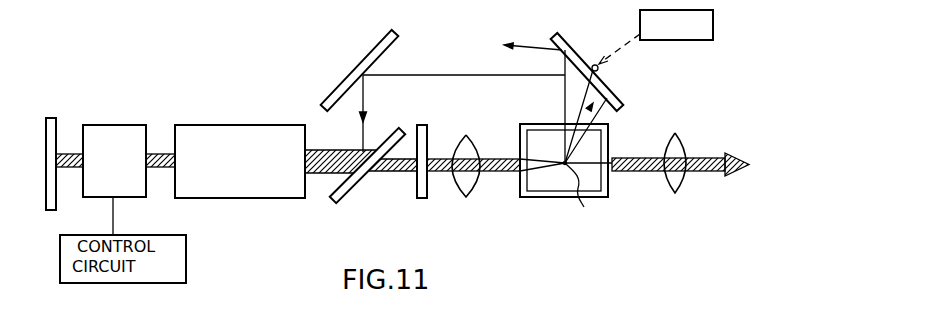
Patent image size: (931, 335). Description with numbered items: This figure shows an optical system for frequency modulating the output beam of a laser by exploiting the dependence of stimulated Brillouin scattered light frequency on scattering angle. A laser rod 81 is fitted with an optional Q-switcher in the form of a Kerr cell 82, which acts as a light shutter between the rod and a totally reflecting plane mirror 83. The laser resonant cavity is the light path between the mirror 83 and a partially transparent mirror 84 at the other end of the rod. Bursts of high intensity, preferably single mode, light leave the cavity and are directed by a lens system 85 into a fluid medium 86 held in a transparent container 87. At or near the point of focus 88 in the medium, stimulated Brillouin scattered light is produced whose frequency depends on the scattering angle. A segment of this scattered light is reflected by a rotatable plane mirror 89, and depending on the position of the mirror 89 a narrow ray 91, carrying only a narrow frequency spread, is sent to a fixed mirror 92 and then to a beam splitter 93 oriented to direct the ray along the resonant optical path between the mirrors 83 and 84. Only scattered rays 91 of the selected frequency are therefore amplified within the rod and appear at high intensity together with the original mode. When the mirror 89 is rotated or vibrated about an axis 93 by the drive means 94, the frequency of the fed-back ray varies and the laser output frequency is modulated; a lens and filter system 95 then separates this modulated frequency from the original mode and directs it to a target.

The laser rod 81 is at (211, 125).
The Kerr cell 82 is at (121, 124).
The totally reflecting plane mirror 83 is at (51, 119).
The partially transparent mirror 84 is at (422, 125).
The lens system 85 is at (463, 137).
The fluid medium 86 is at (543, 182).
The transparent container 87 is at (569, 197).
The point of focus 88 is at (592, 207).
The rotatable plane mirror 89 is at (561, 38).
The narrow ray 91 is at (583, 96).
The fixed mirror 92 is at (355, 67).
The beam splitter 93 is at (600, 70).
The drive means 94 is at (684, 41).
The lens and filter system 95 is at (676, 136).